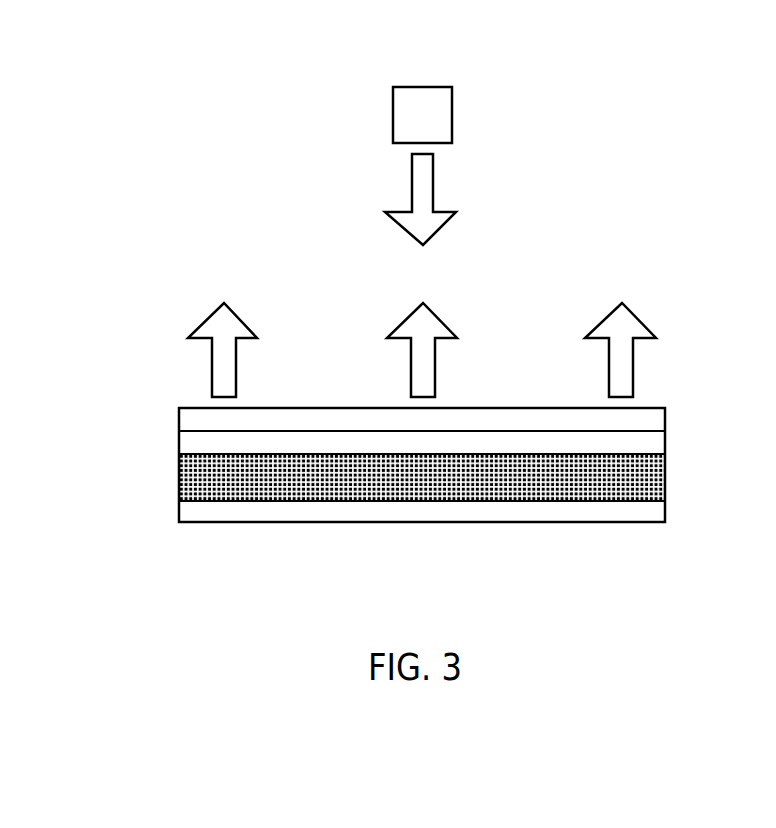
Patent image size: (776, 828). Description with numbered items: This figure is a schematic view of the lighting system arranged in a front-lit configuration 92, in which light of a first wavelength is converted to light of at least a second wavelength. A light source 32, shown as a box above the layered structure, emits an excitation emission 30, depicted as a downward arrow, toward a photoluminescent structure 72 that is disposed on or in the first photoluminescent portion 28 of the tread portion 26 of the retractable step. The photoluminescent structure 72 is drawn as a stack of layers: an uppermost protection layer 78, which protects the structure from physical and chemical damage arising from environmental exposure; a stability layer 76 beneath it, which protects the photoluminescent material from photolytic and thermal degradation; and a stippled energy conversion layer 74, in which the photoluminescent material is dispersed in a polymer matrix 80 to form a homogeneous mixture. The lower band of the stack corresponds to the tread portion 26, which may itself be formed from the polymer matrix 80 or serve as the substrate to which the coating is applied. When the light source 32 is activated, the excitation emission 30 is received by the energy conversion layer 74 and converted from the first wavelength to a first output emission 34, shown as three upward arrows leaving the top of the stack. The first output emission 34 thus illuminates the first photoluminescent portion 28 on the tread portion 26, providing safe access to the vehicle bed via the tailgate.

The front-lit configuration 92 is at (580, 88).
The light source 32 is at (422, 115).
The excitation emission 30 is at (435, 193).
The first output emission 34 is at (232, 325).
The first photoluminescent portion 28 is at (672, 374).
The photoluminescent structure 72 is at (426, 485).
The protection layer 78 is at (185, 418).
The stability layer 76 is at (187, 442).
The polymer matrix 80 is at (182, 478).
The energy conversion layer 74 is at (657, 487).
The tread portion 26 is at (202, 512).